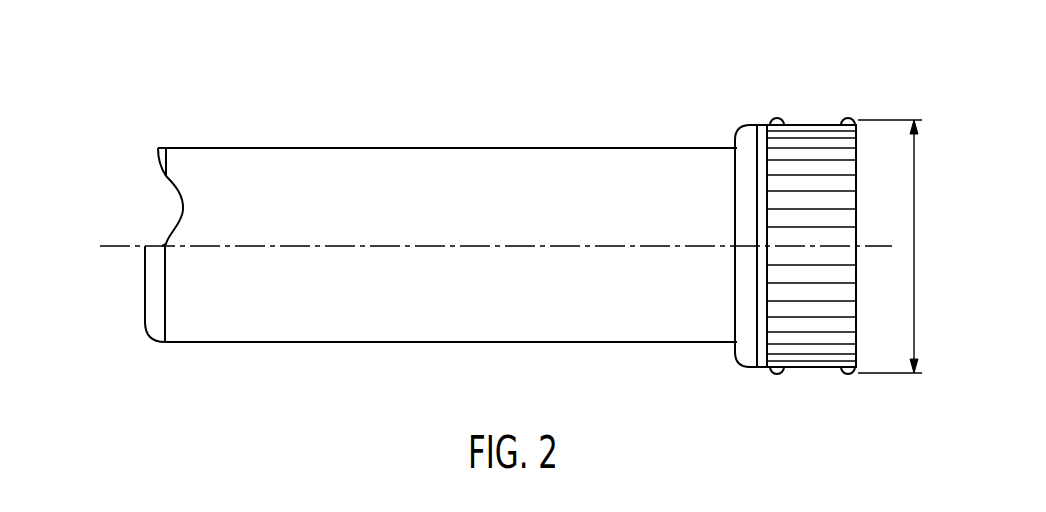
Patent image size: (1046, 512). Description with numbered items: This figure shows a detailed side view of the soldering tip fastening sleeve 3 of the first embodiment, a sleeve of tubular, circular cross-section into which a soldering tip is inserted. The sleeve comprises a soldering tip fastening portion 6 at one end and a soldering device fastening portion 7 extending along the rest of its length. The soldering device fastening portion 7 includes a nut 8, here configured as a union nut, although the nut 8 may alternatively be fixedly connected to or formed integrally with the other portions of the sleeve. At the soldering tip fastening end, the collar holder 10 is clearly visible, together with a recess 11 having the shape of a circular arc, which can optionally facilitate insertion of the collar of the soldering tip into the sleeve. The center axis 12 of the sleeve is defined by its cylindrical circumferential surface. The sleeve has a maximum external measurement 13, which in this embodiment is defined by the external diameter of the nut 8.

The soldering tip fastening sleeve 3 is at (318, 68).
The soldering tip fastening portion 6 is at (191, 223).
The soldering device fastening portion 7 is at (858, 94).
The nut 8 is at (820, 368).
The collar holder 10 is at (147, 338).
The recess 11 is at (183, 209).
The center axis 12 is at (108, 247).
The maximum external measurement 13 is at (893, 246).